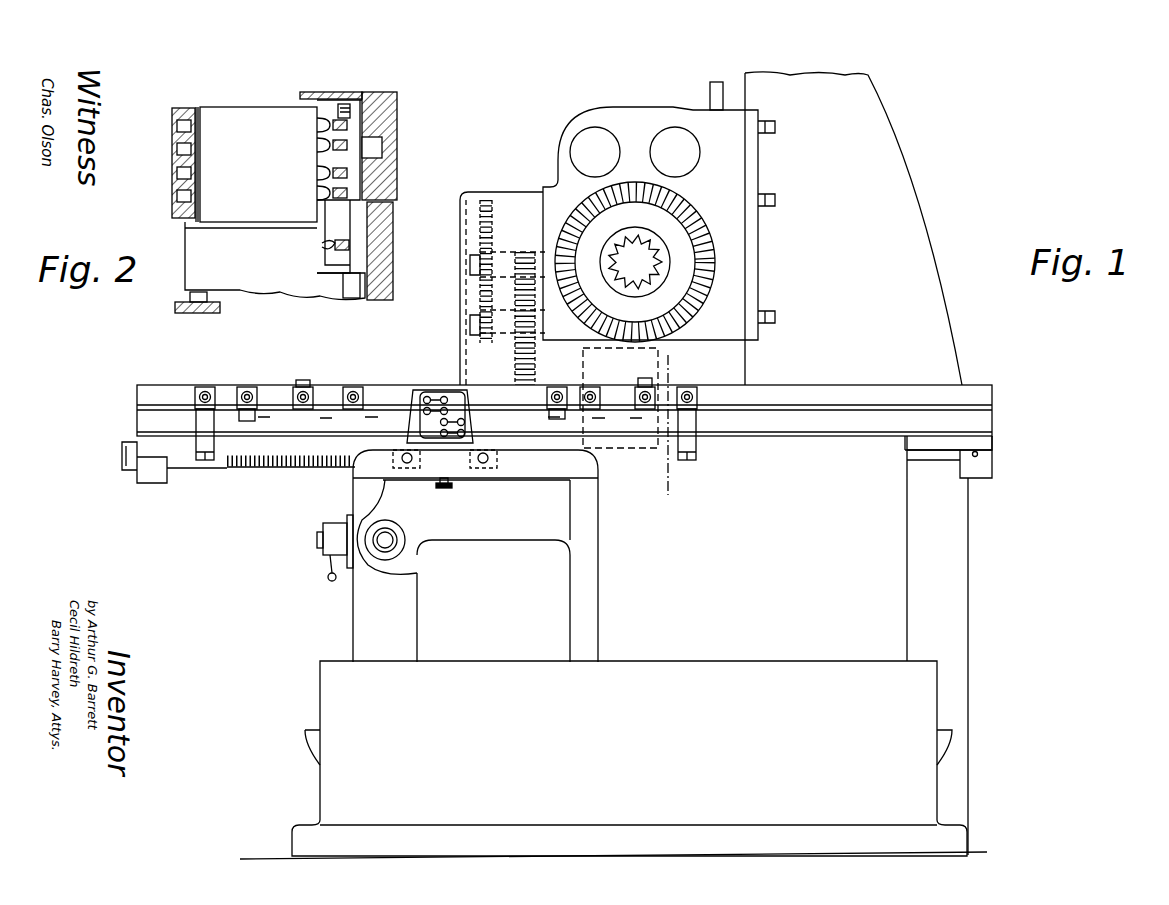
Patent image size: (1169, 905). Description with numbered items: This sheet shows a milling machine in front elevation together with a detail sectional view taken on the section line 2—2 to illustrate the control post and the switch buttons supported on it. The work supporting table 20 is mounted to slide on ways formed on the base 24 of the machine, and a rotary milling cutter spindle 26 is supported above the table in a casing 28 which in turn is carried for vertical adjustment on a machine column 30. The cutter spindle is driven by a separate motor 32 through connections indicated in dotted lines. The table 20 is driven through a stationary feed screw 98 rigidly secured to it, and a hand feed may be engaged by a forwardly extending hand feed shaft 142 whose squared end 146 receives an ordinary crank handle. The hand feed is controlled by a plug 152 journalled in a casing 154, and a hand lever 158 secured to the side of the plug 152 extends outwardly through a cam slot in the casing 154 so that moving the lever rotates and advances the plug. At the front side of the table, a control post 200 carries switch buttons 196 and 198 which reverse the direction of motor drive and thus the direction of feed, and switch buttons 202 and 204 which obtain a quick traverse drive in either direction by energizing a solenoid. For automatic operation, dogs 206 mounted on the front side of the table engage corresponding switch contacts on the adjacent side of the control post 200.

In FIG. 1, the section line 2- 2 is at (672, 490).
In FIG. 1, the work supporting table 20 is at (183, 385).
In FIG. 2, the work supporting table 20 is at (382, 95).
In FIG. 1, the base 24 is at (613, 760).
In FIG. 1, the rotary milling cutter spindle 26 is at (643, 232).
In FIG. 1, the casing 28 is at (735, 276).
In FIG. 1, the machine column 30 is at (935, 322).
In FIG. 1, the motor 32 is at (597, 352).
In FIG. 1, the feed screw 98 is at (312, 466).
In FIG. 1, the hand feed shaft 142 is at (385, 548).
In FIG. 1, the squared end 146 is at (390, 535).
In FIG. 1, the plug 152 is at (317, 546).
In FIG. 1, the casing 154 is at (330, 528).
In FIG. 1, the hand lever 158 is at (326, 573).
In FIG. 1, the switch button 196 is at (428, 392).
In FIG. 2, the switch button 196 is at (177, 127).
In FIG. 1, the switch button 198 is at (470, 448).
In FIG. 2, the switch button 198 is at (177, 199).
In FIG. 1, the control post 200 is at (472, 405).
In FIG. 2, the control post 200 is at (228, 124).
In FIG. 1, the switch button 202 is at (423, 402).
In FIG. 2, the switch button 202 is at (177, 151).
In FIG. 1, the switch button 204 is at (465, 424).
In FIG. 2, the switch button 204 is at (177, 175).
In FIG. 1, the dogs 206 is at (310, 394).
In FIG. 2, the dogs 206 is at (320, 143).